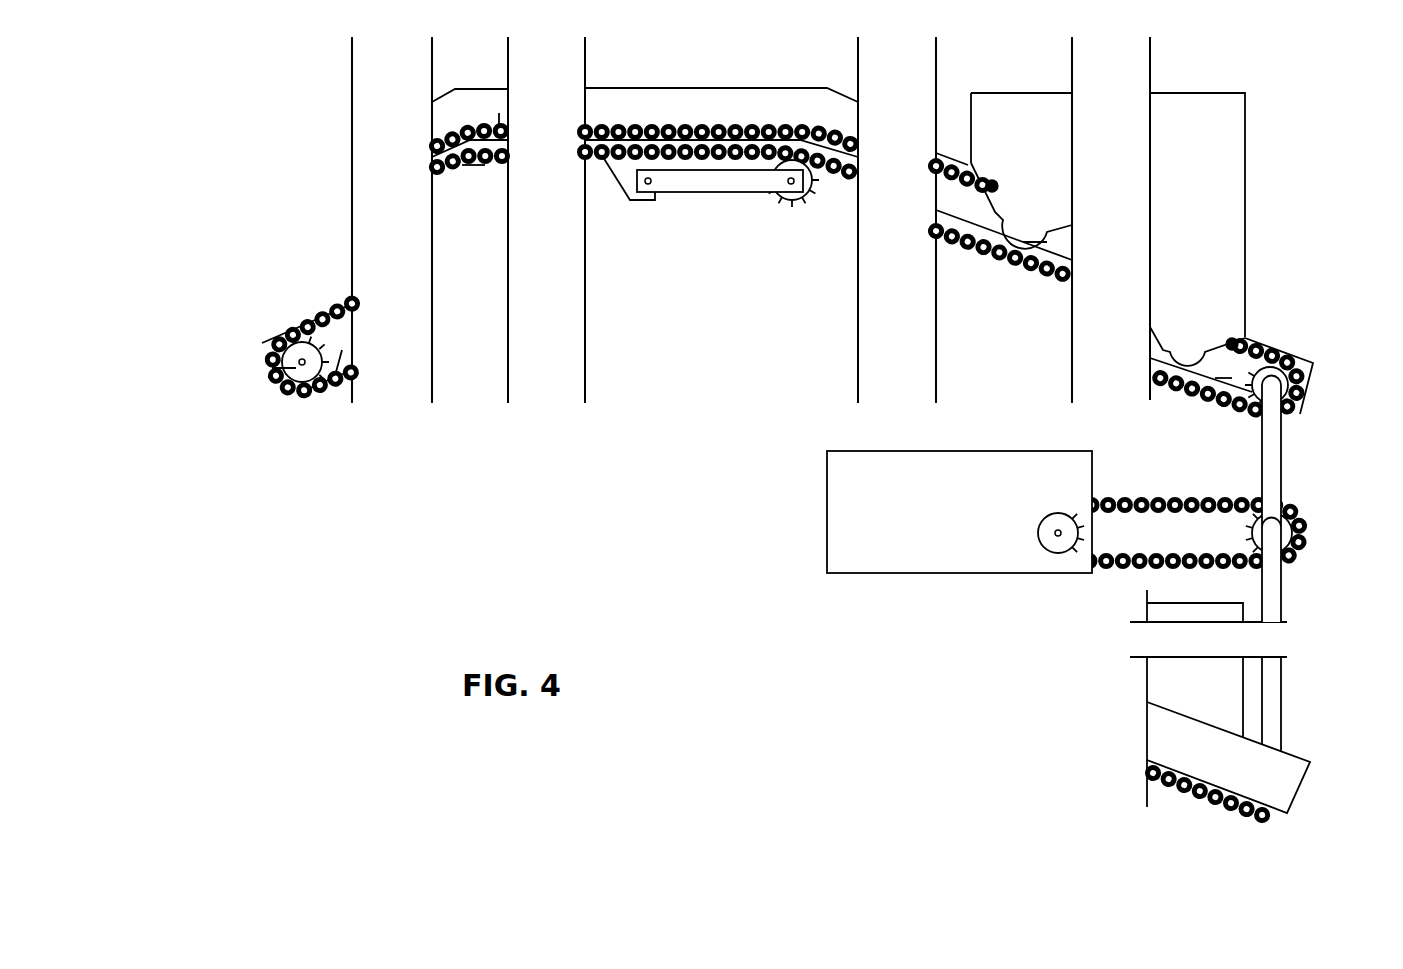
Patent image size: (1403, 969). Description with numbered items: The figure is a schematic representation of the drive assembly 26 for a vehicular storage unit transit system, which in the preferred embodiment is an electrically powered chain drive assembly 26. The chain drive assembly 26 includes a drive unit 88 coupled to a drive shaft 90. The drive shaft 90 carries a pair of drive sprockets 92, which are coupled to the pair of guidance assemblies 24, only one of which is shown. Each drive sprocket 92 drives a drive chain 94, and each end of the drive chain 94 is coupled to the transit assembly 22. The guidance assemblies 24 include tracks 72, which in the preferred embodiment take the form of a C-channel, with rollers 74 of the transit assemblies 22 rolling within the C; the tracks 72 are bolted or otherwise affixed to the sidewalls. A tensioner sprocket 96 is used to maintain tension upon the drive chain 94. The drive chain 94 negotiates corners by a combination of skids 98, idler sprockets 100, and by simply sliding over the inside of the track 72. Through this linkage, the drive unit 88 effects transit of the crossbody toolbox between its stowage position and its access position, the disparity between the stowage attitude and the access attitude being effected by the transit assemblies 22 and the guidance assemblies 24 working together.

The transit assembly 22 is at (1020, 100).
The guidance assembly 24 is at (275, 344).
The drive assembly 26 is at (747, 700).
The track 72 is at (345, 372).
The roller 74 is at (1015, 228).
The drive unit 88 is at (965, 548).
The drive shaft 90 is at (1272, 425).
The drive sprocket 92 is at (1285, 376).
The drive chain 94 is at (338, 308).
The tensioner sprocket 96 is at (784, 195).
The skid 98 is at (462, 168).
The idler sprocket 100 is at (282, 370).